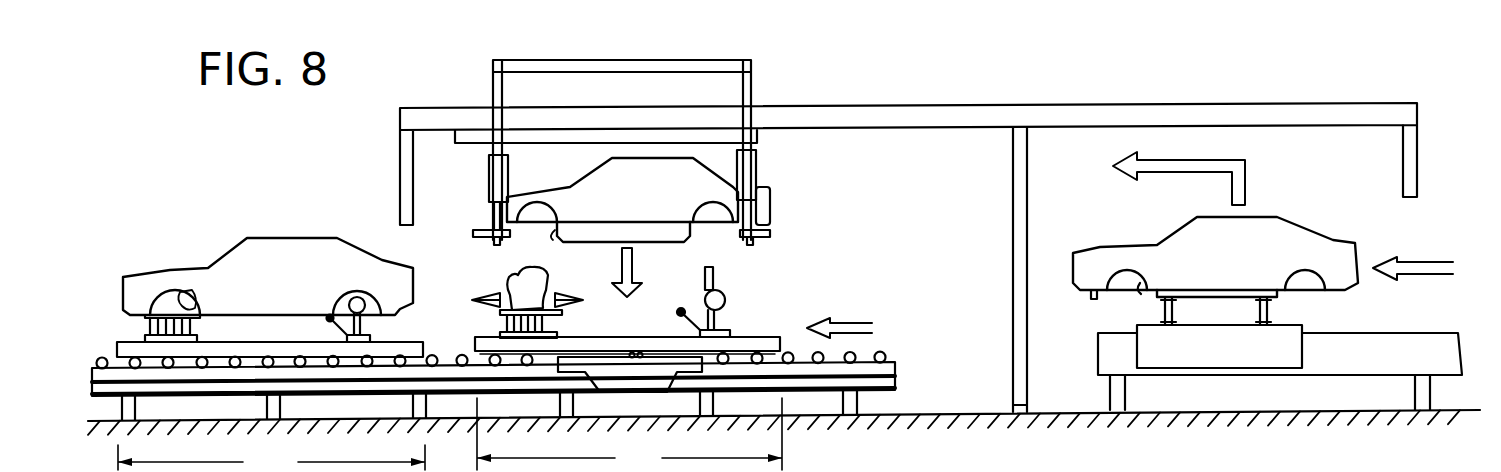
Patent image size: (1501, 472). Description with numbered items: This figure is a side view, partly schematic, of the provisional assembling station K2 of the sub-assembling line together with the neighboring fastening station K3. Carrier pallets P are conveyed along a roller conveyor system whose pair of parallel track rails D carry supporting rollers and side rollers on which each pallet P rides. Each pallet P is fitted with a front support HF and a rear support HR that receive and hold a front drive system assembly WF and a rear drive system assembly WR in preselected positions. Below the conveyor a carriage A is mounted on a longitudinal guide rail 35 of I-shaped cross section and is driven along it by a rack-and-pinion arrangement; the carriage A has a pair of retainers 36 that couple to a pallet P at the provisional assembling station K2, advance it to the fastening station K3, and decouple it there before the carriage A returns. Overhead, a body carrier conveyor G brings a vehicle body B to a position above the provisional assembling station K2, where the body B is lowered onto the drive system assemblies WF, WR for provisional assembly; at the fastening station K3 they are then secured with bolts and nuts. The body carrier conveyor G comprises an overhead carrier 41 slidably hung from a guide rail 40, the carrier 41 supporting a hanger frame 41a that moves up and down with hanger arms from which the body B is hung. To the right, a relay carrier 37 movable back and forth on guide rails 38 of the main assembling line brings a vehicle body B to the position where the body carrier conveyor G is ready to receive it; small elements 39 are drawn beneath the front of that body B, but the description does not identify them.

The guide rail 35 is at (825, 398).
The retainers 36 is at (628, 353).
The relay carrier 37 is at (1148, 322).
The guide rails 38 is at (1373, 335).
The locating pegs 39 is at (1090, 294).
The guide rail 40 is at (928, 103).
The overhead carrier 41 is at (757, 90).
The hanger frame 41a is at (490, 215).
The carriage A is at (657, 372).
The vehicle body B is at (307, 236).
The track rails D is at (865, 355).
The body carrier conveyor G is at (1090, 97).
The carrier pallet P is at (128, 340).
The front support HF is at (502, 335).
The rear support HR is at (735, 330).
The front drive system assembly WF is at (502, 278).
The rear drive system assembly WR is at (723, 283).
The provisional assembling station K2 is at (629, 435).
The fastening station K3 is at (271, 458).